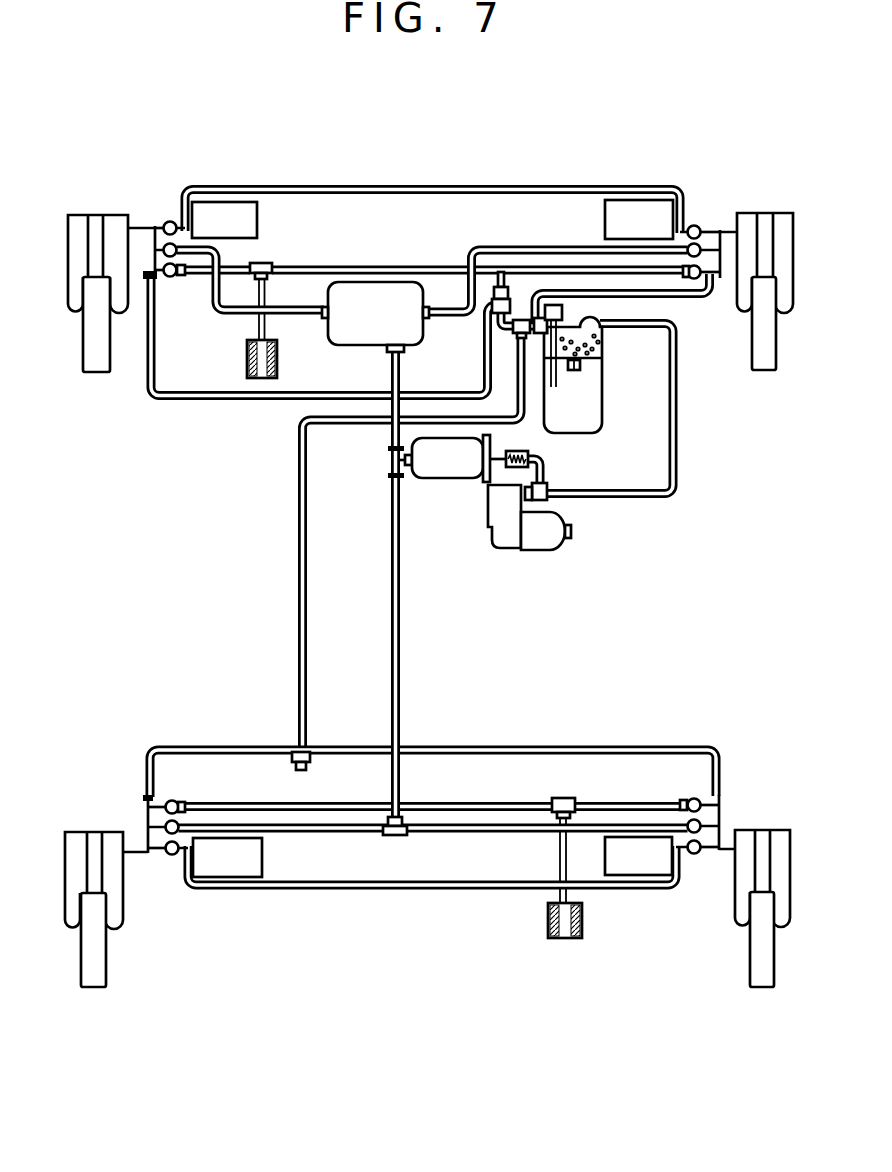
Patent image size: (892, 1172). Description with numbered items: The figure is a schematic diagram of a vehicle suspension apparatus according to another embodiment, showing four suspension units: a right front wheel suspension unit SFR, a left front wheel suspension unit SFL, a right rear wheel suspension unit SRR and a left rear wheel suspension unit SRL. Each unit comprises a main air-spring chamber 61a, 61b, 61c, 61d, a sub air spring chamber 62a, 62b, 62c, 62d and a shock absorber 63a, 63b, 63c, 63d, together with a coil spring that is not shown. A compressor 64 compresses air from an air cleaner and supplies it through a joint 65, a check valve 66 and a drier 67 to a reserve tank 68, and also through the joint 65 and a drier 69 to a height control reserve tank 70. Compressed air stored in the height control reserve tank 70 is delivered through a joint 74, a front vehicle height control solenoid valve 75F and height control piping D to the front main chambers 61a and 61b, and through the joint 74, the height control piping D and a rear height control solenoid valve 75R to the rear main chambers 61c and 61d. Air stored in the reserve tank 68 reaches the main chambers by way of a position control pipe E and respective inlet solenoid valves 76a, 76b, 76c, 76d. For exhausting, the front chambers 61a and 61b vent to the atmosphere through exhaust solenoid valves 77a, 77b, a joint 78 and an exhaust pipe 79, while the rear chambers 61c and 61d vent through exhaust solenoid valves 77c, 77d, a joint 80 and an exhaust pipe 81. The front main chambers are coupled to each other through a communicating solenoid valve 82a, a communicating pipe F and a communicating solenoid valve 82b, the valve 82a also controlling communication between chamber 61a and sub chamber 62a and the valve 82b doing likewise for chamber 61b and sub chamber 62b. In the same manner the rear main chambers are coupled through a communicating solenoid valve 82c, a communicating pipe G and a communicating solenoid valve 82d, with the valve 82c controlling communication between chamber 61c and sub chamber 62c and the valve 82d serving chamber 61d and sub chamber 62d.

The main air-spring chamber 61a is at (787, 313).
The main air-spring chamber 61b is at (74, 313).
The main air-spring chamber 61c is at (785, 928).
The main air-spring chamber 61d is at (75, 930).
The sub air spring chamber 62a is at (604, 212).
The sub air spring chamber 62b is at (259, 211).
The sub air spring chamber 62c is at (633, 877).
The sub air spring chamber 62d is at (262, 857).
The shock absorber 63a is at (752, 350).
The shock absorber 63b is at (106, 360).
The shock absorber 63c is at (751, 968).
The shock absorber 63d is at (107, 968).
The compressor 64 is at (571, 531).
The joint 65 is at (546, 486).
The check valve 66 is at (514, 450).
The drier 67 is at (448, 480).
The reserve tank 68 is at (364, 346).
The drier 69 is at (603, 347).
The height control reserve tank 70 is at (603, 405).
The joint 74 is at (518, 338).
The front vehicle height control solenoid valve 75F is at (495, 288).
The rear height control solenoid valve 75R is at (297, 745).
The inlet solenoid valve 76a is at (700, 244).
The inlet solenoid valve 76b is at (165, 243).
The inlet solenoid valve 76c is at (700, 822).
The inlet solenoid valve 76d is at (167, 823).
The exhaust solenoid valve 77a is at (696, 279).
The exhaust solenoid valve 77b is at (172, 278).
The exhaust solenoid valve 77c is at (689, 800).
The exhaust solenoid valve 77d is at (180, 803).
The joint 78 is at (268, 262).
The exhaust pipe 79 is at (278, 362).
The joint 80 is at (563, 797).
The exhaust pipe 81 is at (562, 940).
The communicating solenoid valve 82a is at (694, 225).
The communicating solenoid valve 82b is at (172, 221).
The communicating solenoid valve 82c is at (695, 856).
The communicating solenoid valve 82d is at (172, 856).
The height control piping D is at (220, 399).
The position control pipe E is at (300, 314).
The communicating pipe F is at (400, 186).
The communicating pipe G is at (441, 890).
The left front wheel suspension unit SFL is at (107, 291).
The right front wheel suspension unit SFR is at (749, 281).
The left rear wheel suspension unit SRL is at (121, 904).
The right rear wheel suspension unit SRR is at (735, 905).